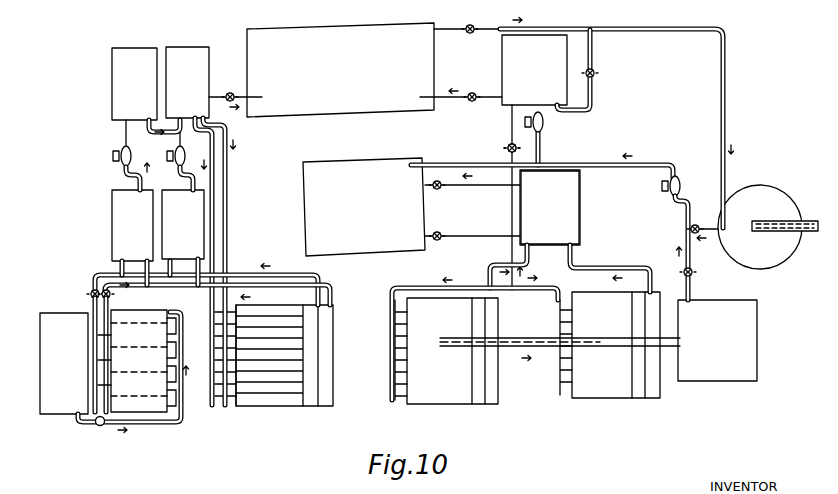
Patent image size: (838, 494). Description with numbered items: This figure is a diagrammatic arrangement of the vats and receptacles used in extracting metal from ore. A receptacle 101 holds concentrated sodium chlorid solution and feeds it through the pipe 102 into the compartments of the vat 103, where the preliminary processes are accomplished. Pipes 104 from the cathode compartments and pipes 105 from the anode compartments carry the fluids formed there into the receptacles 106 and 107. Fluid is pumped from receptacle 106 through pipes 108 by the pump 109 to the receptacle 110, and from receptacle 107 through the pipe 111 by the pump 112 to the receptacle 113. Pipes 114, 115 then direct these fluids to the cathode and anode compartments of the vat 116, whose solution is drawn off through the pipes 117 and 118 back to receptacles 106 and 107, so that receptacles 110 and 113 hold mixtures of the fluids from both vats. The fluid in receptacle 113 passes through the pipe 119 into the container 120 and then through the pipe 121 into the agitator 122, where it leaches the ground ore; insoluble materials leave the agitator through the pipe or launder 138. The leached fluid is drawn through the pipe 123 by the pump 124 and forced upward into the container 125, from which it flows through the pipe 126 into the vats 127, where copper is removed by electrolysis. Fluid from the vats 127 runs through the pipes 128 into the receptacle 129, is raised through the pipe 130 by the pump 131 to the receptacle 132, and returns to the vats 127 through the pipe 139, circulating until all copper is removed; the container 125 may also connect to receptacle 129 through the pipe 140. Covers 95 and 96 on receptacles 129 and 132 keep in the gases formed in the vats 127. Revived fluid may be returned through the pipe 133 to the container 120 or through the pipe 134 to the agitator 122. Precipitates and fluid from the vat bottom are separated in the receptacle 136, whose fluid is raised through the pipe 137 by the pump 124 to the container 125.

The cover 95 is at (567, 50).
The cover 96 is at (568, 186).
The receptacle 101 is at (58, 320).
The pipe 102 is at (90, 425).
The vat 103 is at (150, 412).
The pipes 104 is at (88, 280).
The pipes 105 is at (110, 287).
The receptacle 106 is at (132, 225).
The receptacle 107 is at (183, 224).
The pipes 108 is at (130, 176).
The pump 109 is at (121, 154).
The receptacle 110 is at (118, 74).
The pipe 111 is at (187, 178).
The pump 112 is at (175, 156).
The receptacle 113 is at (198, 61).
The pipe 114 is at (215, 180).
The pipe 115 is at (228, 208).
The vat 116 is at (277, 407).
The pipe 117 is at (322, 278).
The pipe 118 is at (332, 291).
The pipe 119 is at (262, 95).
The container 120 is at (340, 70).
The pipe 121 is at (468, 28).
The agitator 122 is at (770, 198).
The pipe 123 is at (687, 212).
The pump 124 is at (680, 180).
The container 125 is at (364, 207).
The pipe 126 is at (462, 234).
The vats 127 is at (433, 404).
The pipes 128 is at (490, 272).
The receptacle 129 is at (578, 204).
The pipe 130 is at (548, 147).
The pump 131 is at (522, 128).
The receptacle 132 is at (534, 70).
The pipe 133 is at (441, 96).
The pipe 134 is at (593, 106).
The receptacle 136 is at (758, 330).
The pipe 137 is at (690, 292).
The pipe or launder 138 is at (806, 234).
The pipe 139 is at (507, 151).
The pipe 140 is at (462, 188).